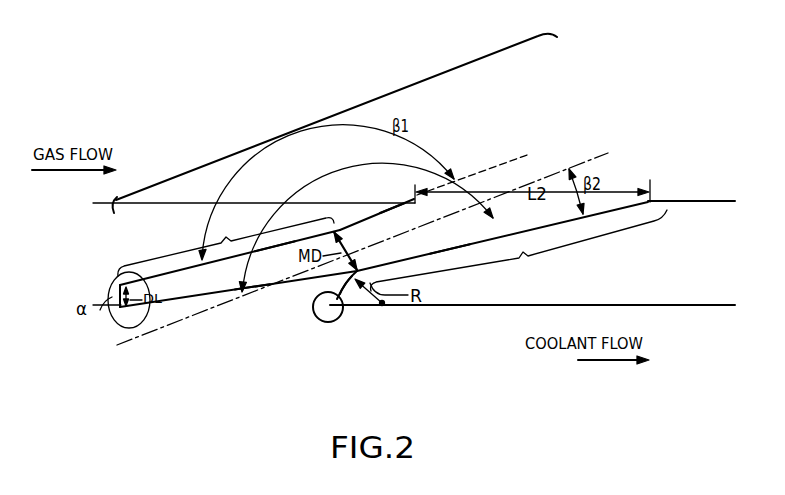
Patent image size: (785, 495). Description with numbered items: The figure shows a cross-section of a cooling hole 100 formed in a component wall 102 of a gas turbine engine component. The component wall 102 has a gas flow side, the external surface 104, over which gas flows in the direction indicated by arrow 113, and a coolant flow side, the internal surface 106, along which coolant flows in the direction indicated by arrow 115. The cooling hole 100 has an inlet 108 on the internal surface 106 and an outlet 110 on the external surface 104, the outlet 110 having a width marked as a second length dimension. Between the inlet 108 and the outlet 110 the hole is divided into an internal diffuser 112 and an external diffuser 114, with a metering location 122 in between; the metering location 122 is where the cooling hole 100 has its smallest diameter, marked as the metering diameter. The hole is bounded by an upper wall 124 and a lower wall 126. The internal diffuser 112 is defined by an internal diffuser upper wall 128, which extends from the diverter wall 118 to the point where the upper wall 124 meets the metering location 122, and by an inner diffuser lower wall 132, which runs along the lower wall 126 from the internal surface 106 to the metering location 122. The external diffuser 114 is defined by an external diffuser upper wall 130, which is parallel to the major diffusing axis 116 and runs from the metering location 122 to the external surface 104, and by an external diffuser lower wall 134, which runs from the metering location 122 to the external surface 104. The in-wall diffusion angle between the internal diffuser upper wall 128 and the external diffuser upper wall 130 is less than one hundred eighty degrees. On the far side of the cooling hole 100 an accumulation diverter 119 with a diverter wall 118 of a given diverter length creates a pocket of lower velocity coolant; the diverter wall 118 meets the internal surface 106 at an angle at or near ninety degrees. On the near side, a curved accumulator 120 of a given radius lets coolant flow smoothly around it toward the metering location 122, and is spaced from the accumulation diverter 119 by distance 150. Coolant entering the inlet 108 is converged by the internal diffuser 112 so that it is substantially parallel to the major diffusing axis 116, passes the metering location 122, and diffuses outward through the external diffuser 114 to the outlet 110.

The cooling hole 100 is at (343, 112).
The component wall 102 is at (151, 221).
The external surface 104 is at (363, 212).
The internal surface 106 is at (464, 306).
The inlet 108 is at (161, 309).
The outlet 110 is at (646, 202).
The internal diffuser 112 is at (226, 247).
The arrow indicating direction of gas flow 113 is at (74, 183).
The external diffuser 114 is at (512, 246).
The arrow indicating direction of coolant flow 115 is at (605, 372).
The major diffusing axis 116 is at (575, 164).
The diverter wall 118 is at (117, 291).
The accumulation diverter 119 is at (108, 329).
The accumulator 120 is at (341, 318).
The metering location 122 is at (374, 305).
The upper wall 124 is at (275, 247).
The lower wall 126 is at (650, 277).
The internal diffuser upper wall 128 is at (197, 267).
The external diffuser upper wall 130 is at (393, 206).
The inner diffuser lower wall 132 is at (354, 288).
The external diffuser lower wall 134 is at (449, 251).
The distance 150 is at (253, 288).